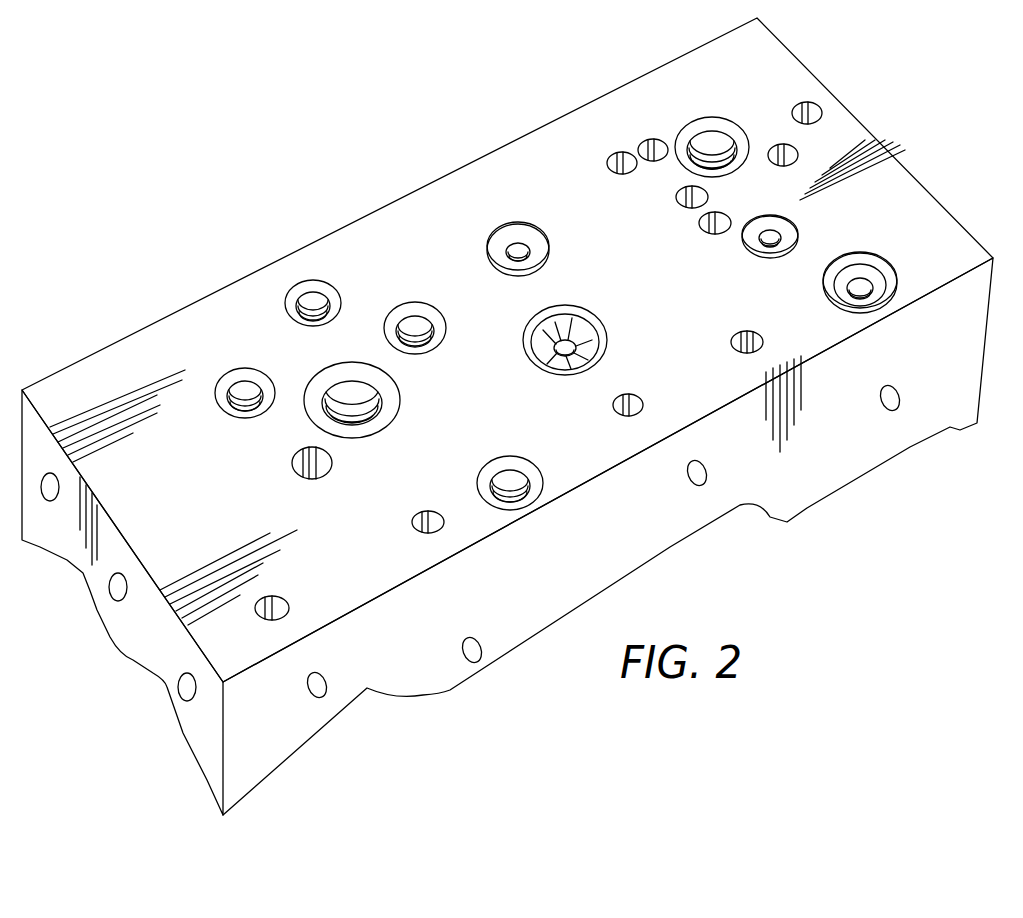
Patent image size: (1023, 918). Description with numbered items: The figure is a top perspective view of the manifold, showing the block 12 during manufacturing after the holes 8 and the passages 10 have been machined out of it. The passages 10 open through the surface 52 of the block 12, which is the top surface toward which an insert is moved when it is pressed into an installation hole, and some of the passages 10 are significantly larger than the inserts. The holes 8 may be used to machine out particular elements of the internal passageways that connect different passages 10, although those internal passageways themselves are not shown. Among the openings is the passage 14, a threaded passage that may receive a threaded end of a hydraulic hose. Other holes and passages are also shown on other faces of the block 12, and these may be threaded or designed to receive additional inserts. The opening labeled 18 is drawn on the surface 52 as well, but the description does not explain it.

The block 12 is at (507, 416).
The surface 52 is at (370, 258).
The passages 10 is at (568, 340).
The passage 14 is at (517, 490).
The oval port 18 is at (640, 405).
The holes 8 is at (753, 334).